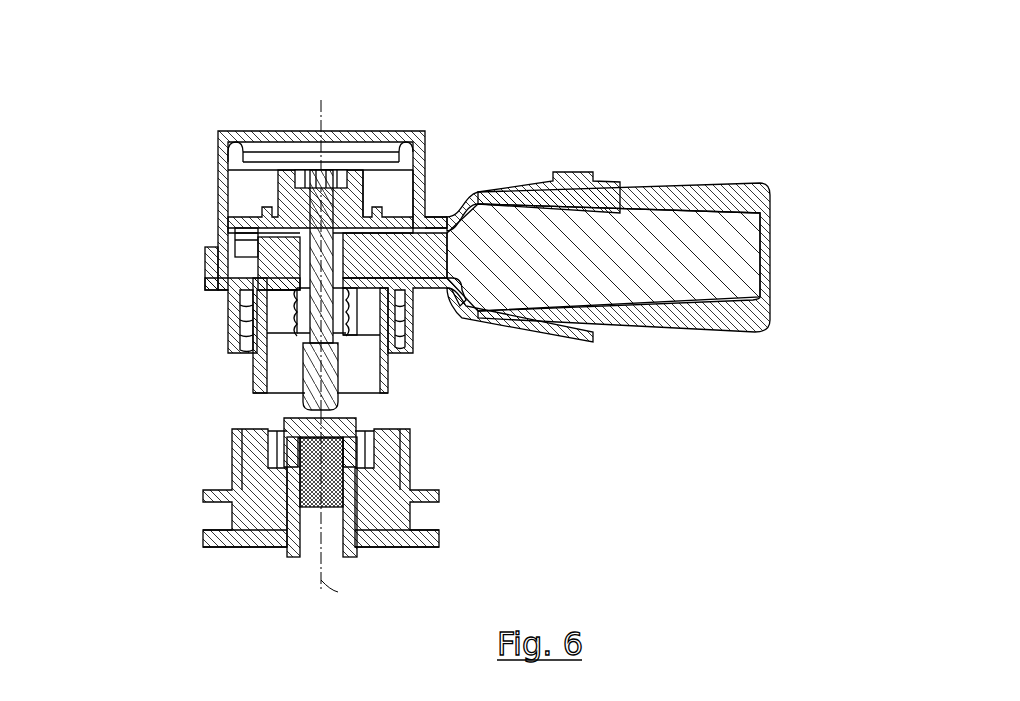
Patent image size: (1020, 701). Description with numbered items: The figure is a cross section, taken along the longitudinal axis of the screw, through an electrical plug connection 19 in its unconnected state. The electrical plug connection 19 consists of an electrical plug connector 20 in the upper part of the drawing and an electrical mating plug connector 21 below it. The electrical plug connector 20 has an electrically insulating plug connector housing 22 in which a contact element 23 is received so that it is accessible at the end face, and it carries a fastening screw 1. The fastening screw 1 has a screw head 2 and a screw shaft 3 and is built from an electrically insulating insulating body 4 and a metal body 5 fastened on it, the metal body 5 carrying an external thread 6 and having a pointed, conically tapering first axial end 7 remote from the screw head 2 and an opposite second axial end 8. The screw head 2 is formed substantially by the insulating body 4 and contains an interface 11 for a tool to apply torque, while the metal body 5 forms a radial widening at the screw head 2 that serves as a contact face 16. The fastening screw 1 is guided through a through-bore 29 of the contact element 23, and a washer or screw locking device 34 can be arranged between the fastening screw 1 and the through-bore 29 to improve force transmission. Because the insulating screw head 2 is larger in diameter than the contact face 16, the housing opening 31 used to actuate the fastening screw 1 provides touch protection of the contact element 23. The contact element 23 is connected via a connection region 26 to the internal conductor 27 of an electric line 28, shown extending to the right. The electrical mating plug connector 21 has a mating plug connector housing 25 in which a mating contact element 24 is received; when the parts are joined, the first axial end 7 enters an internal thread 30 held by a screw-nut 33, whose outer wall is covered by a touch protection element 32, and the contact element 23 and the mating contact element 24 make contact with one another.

The fastening screw 1 is at (372, 183).
The screw head 2 is at (218, 190).
The screw shaft 3 is at (287, 372).
The insulating body 4 is at (301, 168).
The metal body 5 is at (232, 232).
The external thread 6 is at (245, 298).
The first axial end 7 is at (337, 348).
The second axial end 8 is at (270, 205).
The interface 11 is at (345, 172).
The contact face 16 is at (243, 248).
The electrical plug connection 19 is at (128, 70).
The electrical plug connector 20 is at (116, 192).
The electrical mating plug connector 21 is at (116, 477).
The plug connector housing 22 is at (412, 136).
The contact element 23 is at (420, 318).
The mating contact element 24 is at (242, 542).
The mating plug connector housing 25 is at (405, 458).
The connection region 26 is at (507, 167).
The internal conductor 27 is at (775, 272).
The electric line 28 is at (708, 184).
The through-bore 29 is at (243, 322).
The internal thread 30 is at (358, 512).
The housing opening 31 is at (258, 140).
The touch protection element 32 is at (357, 418).
The screw-nut 33 is at (292, 558).
The screw locking device 34 is at (438, 212).